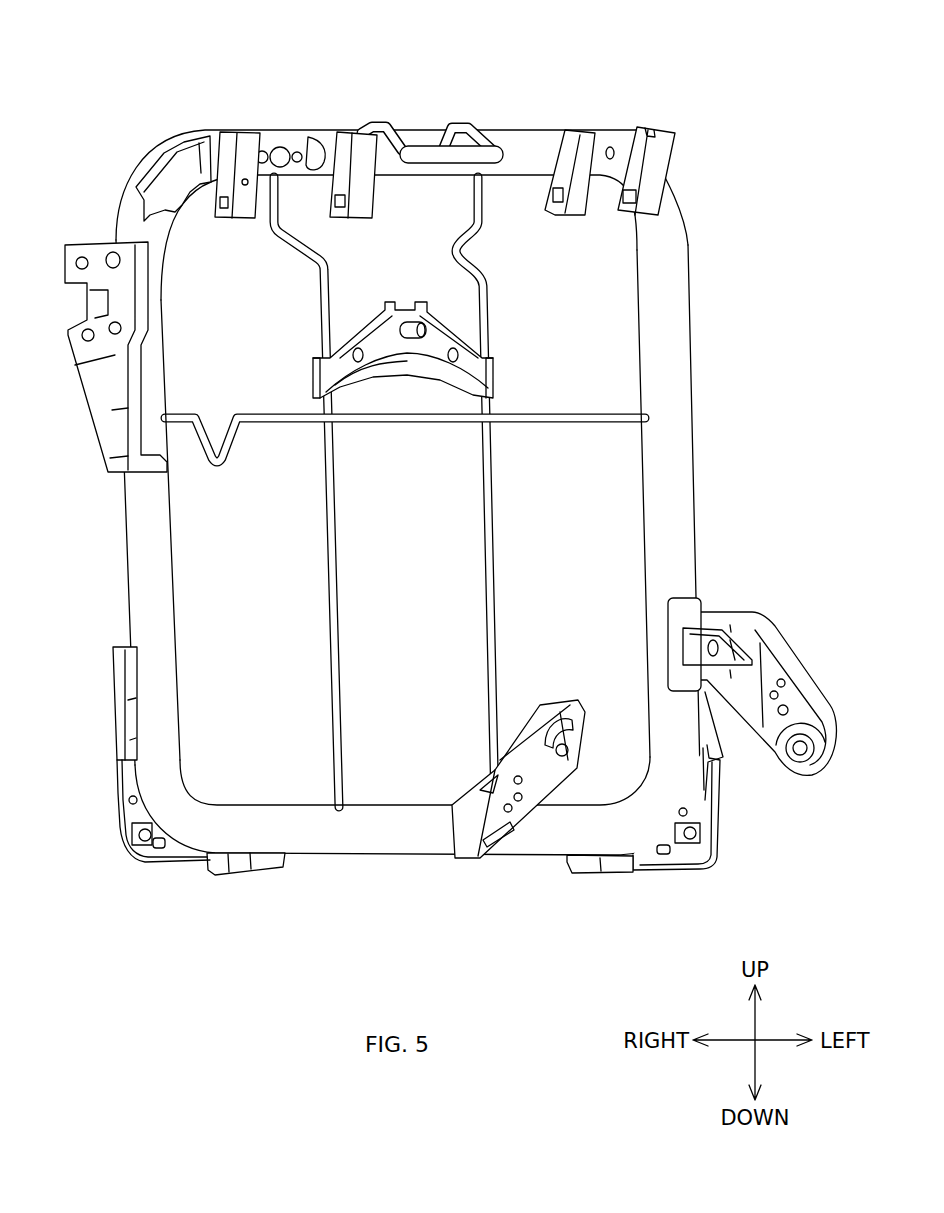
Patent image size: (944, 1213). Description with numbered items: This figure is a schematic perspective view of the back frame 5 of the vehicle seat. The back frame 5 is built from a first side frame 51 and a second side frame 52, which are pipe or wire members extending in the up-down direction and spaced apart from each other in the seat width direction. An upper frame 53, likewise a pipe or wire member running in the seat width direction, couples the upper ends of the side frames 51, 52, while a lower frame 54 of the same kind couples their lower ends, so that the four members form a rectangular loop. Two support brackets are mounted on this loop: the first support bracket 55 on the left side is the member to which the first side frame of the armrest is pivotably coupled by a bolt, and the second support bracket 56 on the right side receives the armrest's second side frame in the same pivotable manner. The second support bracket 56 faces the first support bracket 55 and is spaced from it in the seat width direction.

The back frame 5 is at (668, 77).
The first side frame 51 is at (665, 375).
The second side frame 52 is at (141, 552).
The upper frame 53 is at (524, 142).
The lower frame 54 is at (373, 838).
The first support bracket 55 is at (783, 657).
The second support bracket 56 is at (529, 705).